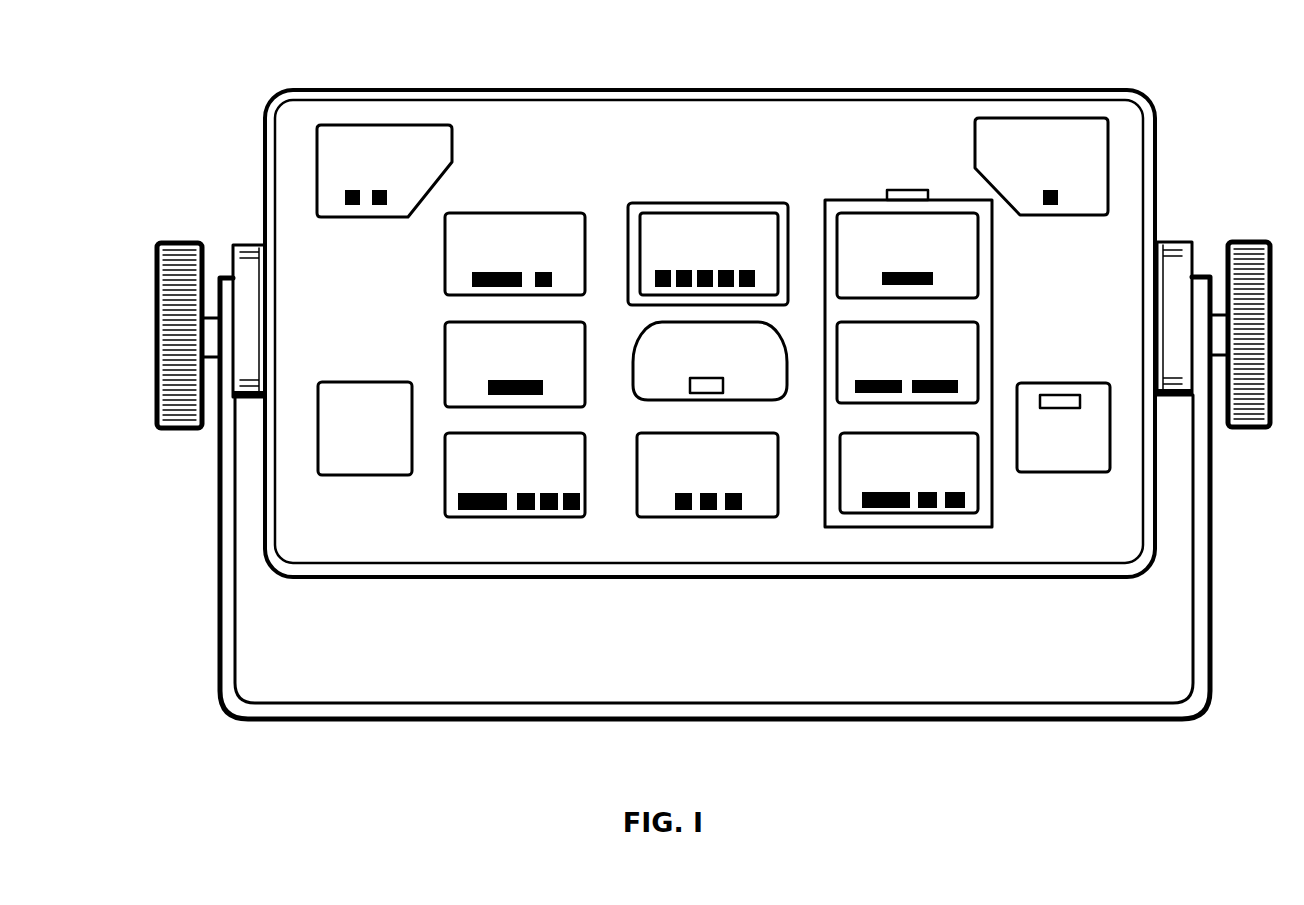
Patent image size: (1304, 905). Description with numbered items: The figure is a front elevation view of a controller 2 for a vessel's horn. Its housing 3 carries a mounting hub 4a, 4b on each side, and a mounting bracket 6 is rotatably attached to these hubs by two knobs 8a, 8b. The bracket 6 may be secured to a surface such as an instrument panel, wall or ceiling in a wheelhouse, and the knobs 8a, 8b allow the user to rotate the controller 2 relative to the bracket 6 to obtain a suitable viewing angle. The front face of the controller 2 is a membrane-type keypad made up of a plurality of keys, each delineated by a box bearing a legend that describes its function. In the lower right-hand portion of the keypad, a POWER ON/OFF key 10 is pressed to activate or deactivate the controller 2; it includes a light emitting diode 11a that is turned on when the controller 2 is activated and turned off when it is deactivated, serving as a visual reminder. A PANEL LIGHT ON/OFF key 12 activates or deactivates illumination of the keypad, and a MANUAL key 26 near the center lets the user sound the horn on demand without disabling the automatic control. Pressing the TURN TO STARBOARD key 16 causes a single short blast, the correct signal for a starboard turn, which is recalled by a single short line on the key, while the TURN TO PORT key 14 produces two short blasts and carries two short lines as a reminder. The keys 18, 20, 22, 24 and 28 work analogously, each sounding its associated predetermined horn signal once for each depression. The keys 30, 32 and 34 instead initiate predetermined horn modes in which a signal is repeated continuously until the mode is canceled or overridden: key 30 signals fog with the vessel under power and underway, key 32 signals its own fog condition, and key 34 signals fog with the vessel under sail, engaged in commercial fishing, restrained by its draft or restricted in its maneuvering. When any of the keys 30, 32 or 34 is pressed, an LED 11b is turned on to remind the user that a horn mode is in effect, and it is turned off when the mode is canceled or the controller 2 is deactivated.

The controller 2 is at (745, 45).
The housing 3 is at (815, 90).
The mounting hub 4a is at (248, 245).
The mounting hub 4b is at (1172, 240).
The mounting bracket 6 is at (1203, 637).
The knob 8a is at (157, 266).
The knob 8b is at (1255, 242).
The POWER ON/OFF key 10 is at (1048, 385).
The light emitting diode 11a is at (1077, 395).
The LED 11b is at (912, 192).
The PANEL LIGHT ON/OFF key 12 is at (333, 392).
The TURN TO PORT key 14 is at (448, 162).
The TURN TO STARBOARD key 16 is at (1008, 128).
The key 18 is at (445, 252).
The key 20 is at (452, 342).
The key 22 is at (460, 488).
The key 24 is at (657, 505).
The MANUAL key 26 is at (655, 380).
The key 28 is at (660, 205).
The key 30 is at (970, 273).
The key 32 is at (968, 366).
The key 34 is at (970, 488).